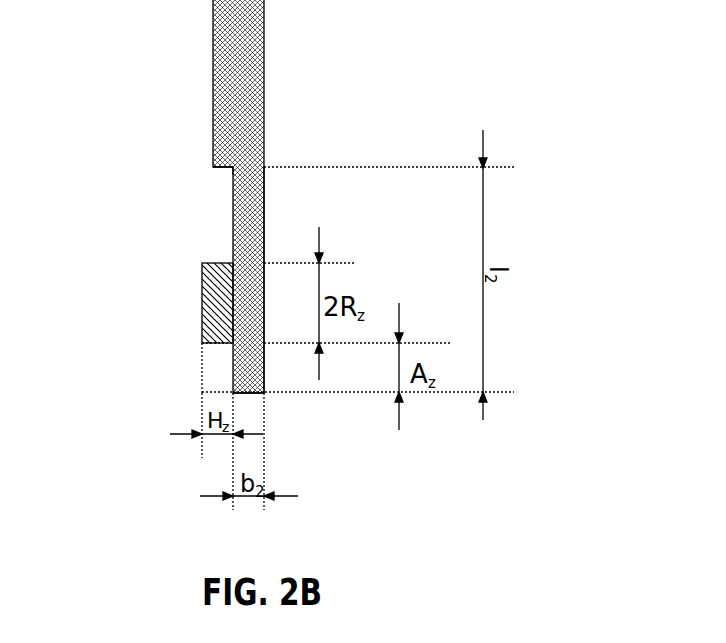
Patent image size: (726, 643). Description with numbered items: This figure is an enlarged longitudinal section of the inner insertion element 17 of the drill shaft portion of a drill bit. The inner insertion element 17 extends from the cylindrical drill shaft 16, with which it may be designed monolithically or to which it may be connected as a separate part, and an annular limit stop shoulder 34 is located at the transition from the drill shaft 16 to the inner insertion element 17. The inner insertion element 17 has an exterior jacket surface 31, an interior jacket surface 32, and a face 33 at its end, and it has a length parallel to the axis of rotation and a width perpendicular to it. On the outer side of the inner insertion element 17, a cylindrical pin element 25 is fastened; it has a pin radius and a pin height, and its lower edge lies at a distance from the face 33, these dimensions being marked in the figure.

The drill shaft 16 is at (219, 50).
The annular limit stop shoulder 34 is at (213, 186).
The inner insertion element 17 is at (250, 224).
The interior jacket surface 32 is at (276, 202).
The pin element 25 is at (202, 304).
The exterior jacket surface 31 is at (233, 353).
The face 33 is at (248, 397).